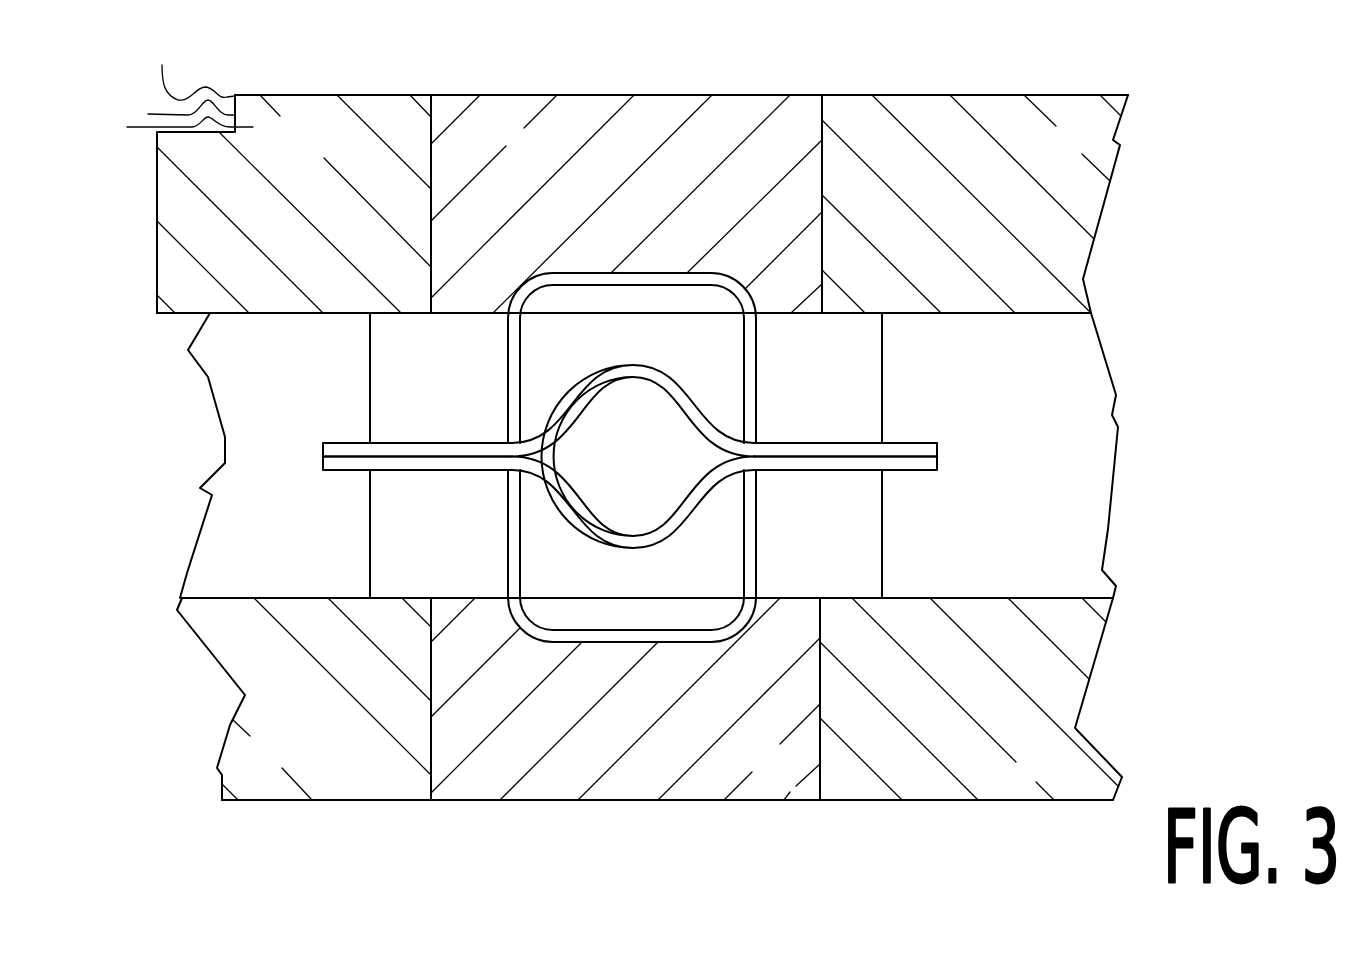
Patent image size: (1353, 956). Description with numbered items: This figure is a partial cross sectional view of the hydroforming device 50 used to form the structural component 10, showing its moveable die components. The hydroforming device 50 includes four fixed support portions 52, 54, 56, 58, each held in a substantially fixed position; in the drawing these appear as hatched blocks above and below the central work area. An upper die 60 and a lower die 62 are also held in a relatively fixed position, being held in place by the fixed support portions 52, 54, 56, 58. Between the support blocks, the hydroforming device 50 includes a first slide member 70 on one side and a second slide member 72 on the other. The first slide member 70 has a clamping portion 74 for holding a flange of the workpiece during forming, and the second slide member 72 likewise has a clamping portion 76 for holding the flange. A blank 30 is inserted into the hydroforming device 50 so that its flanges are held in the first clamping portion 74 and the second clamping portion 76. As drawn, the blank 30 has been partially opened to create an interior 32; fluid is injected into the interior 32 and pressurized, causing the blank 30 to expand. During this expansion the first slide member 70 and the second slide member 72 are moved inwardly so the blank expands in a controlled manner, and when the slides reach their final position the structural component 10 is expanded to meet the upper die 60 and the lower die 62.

The structural component 10 is at (581, 284).
The blank 30 is at (653, 370).
The interior 32 is at (667, 488).
The hydroforming device 50 is at (886, 76).
The fixed support portion 52 is at (322, 152).
The fixed support portion 54 is at (1096, 145).
The fixed support portion 56 is at (1057, 775).
The fixed support portion 58 is at (271, 778).
The upper die 60 is at (517, 140).
The lower die 62 is at (790, 782).
The first slide member 70 is at (357, 352).
The second slide member 72 is at (942, 362).
The clamping portion 74 is at (335, 410).
The clamping portion 76 is at (902, 471).